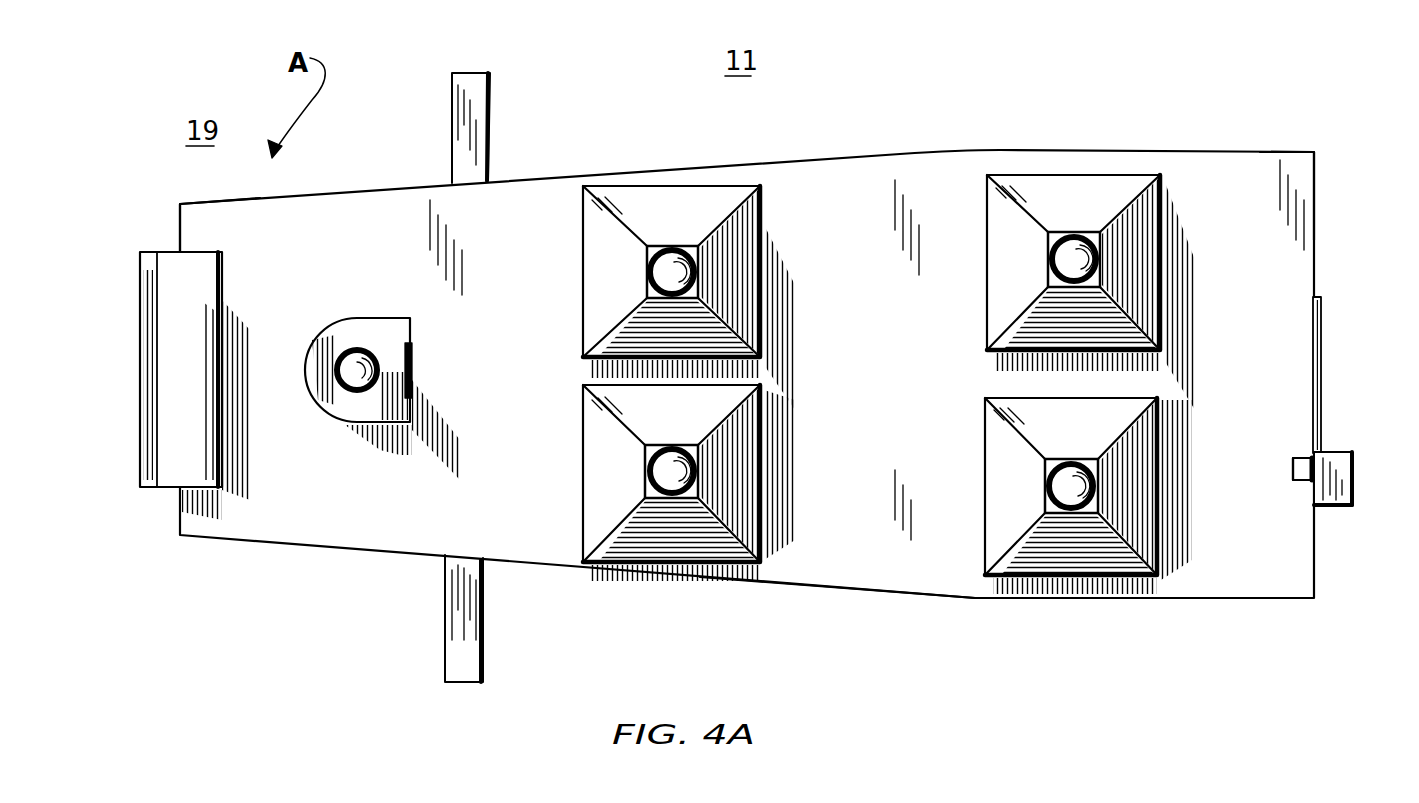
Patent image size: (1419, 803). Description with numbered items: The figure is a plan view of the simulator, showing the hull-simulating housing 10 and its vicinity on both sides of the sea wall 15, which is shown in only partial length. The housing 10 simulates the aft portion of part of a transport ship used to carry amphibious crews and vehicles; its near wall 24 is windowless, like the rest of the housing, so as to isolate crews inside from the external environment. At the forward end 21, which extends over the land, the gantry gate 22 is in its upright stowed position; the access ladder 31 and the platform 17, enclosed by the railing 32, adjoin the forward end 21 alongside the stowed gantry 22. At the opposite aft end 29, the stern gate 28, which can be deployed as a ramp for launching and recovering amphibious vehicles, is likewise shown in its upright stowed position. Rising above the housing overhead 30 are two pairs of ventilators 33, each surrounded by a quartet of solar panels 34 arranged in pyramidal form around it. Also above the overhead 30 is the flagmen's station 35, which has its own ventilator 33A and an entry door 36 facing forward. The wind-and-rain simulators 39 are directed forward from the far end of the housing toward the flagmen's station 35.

The housing 10 is at (873, 192).
The sea wall 15 is at (476, 72).
The platform 17 is at (1345, 452).
The forward end 21 is at (1316, 183).
The gantry gate 22 is at (1321, 314).
The near wall 24 is at (862, 592).
The stern gate 28 is at (150, 487).
The aft end 29 is at (180, 214).
The housing overhead 30 is at (505, 200).
The access ladder 31 is at (1293, 481).
The railing 32 is at (1332, 505).
The ventilators 33 is at (665, 268).
The ventilator 33A is at (352, 393).
The solar panels 34 is at (603, 240).
The flagmen's station 35 is at (358, 318).
The entry door 36 is at (414, 376).
The wind-and-rain simulators 39 is at (210, 283).